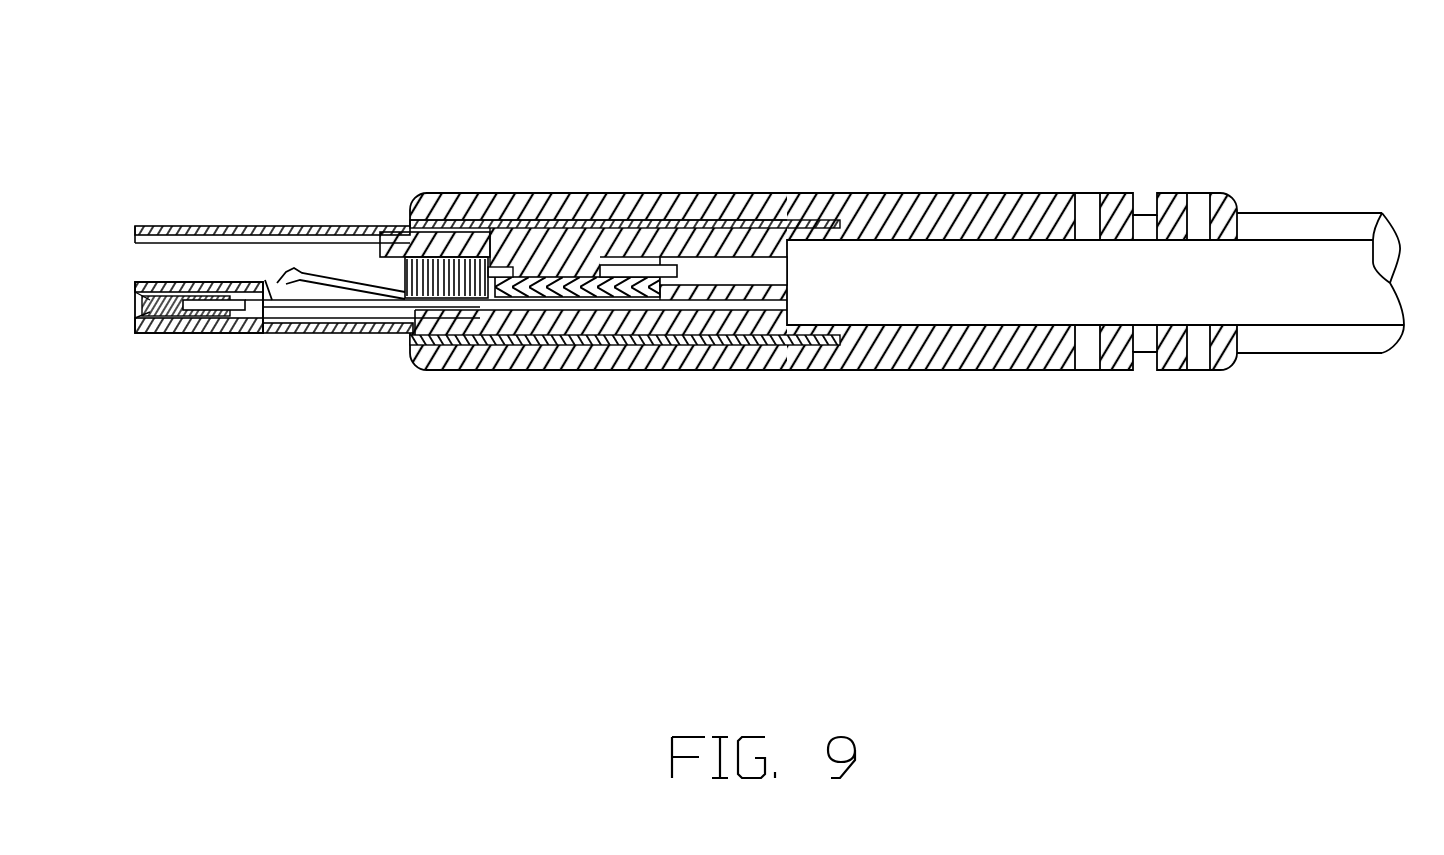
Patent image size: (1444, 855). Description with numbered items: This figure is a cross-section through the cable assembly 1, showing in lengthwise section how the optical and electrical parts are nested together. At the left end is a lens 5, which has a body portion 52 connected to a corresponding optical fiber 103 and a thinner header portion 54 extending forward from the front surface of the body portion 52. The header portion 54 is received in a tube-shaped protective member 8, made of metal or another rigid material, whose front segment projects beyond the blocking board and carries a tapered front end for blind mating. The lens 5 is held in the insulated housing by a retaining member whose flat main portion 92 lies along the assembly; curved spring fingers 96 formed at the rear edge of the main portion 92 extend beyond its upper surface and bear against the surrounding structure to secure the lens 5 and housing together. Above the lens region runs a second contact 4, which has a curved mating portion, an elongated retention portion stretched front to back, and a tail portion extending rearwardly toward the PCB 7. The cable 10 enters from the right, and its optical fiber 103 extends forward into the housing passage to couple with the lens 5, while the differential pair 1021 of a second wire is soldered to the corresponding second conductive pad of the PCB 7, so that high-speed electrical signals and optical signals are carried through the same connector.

The cable assembly 1 is at (841, 176).
The second contact 4 is at (318, 277).
The lens 5 is at (198, 118).
The PCB 7 is at (564, 280).
The protective member 8 is at (131, 323).
The cable 10 is at (1268, 270).
The body portion 52 is at (172, 290).
The header portion 54 is at (136, 290).
The main portion 92 is at (191, 327).
The spring finger 96 is at (252, 325).
The optical fiber 103 is at (553, 322).
The differential pair 1021 is at (648, 270).